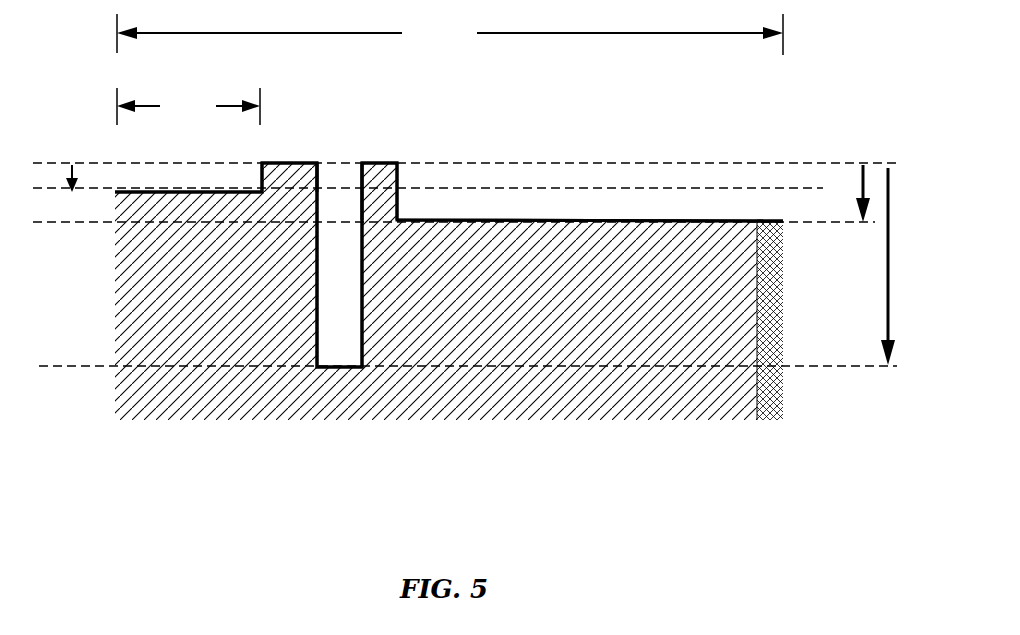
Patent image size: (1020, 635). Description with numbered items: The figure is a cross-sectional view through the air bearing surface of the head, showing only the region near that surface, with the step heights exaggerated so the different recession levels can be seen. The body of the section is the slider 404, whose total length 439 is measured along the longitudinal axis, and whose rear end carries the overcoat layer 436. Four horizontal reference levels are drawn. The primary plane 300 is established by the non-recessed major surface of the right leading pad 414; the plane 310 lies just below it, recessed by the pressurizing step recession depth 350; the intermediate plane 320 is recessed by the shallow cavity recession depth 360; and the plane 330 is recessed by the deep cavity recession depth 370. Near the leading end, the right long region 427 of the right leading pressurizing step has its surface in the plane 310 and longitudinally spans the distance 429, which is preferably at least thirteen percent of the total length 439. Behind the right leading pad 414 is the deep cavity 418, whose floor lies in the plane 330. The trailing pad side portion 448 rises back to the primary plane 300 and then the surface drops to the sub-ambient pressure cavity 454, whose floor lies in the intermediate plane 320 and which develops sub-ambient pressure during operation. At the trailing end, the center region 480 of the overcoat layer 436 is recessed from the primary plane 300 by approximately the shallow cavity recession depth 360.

The primary plane 300 is at (850, 163).
The plane 310 is at (798, 188).
The intermediate plane 320 is at (40, 222).
The plane 330 is at (43, 366).
The pressurizing step recession depth 350 is at (70, 165).
The shallow cavity recession depth 360 is at (862, 198).
The deep cavity recession depth 370 is at (888, 262).
The slider 404 is at (620, 387).
The right leading pad 414 is at (289, 166).
The deep cavity 418 is at (339, 266).
The right long region 427 is at (188, 182).
The distance 429 is at (188, 106).
The overcoat layer 436 is at (770, 395).
The total length 439 is at (450, 34).
The trailing pad side portion 448 is at (380, 180).
The sub-ambient pressure cavity 454 is at (590, 208).
The center region 480 is at (768, 219).